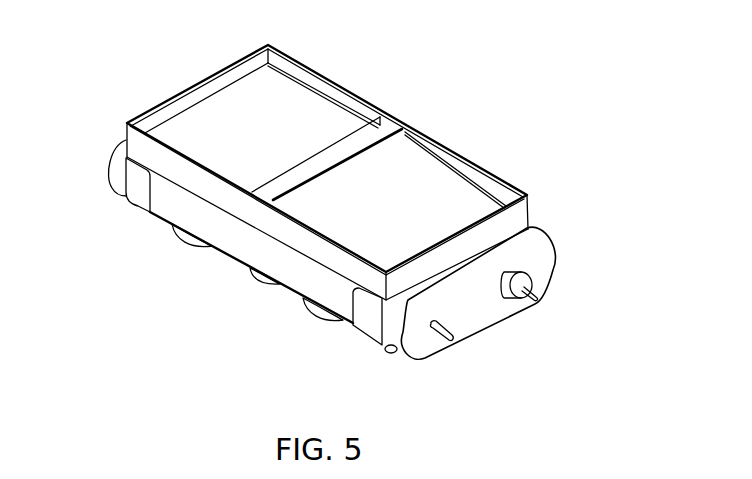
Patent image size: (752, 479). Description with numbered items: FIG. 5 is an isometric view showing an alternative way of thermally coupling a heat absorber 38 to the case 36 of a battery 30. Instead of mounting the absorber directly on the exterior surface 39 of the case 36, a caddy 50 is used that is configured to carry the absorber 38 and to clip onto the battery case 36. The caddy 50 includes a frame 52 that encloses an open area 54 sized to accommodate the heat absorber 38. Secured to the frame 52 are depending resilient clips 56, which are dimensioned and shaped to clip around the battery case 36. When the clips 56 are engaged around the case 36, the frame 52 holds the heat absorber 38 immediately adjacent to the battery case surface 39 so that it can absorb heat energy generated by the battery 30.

The battery 30 is at (532, 272).
The case 36 is at (395, 352).
The heat absorber 38 is at (433, 172).
The exterior surface 39 is at (519, 244).
The caddy 50 is at (537, 192).
The frame 52 is at (198, 82).
The open area 54 is at (300, 110).
The resilient clips 56 is at (137, 205).